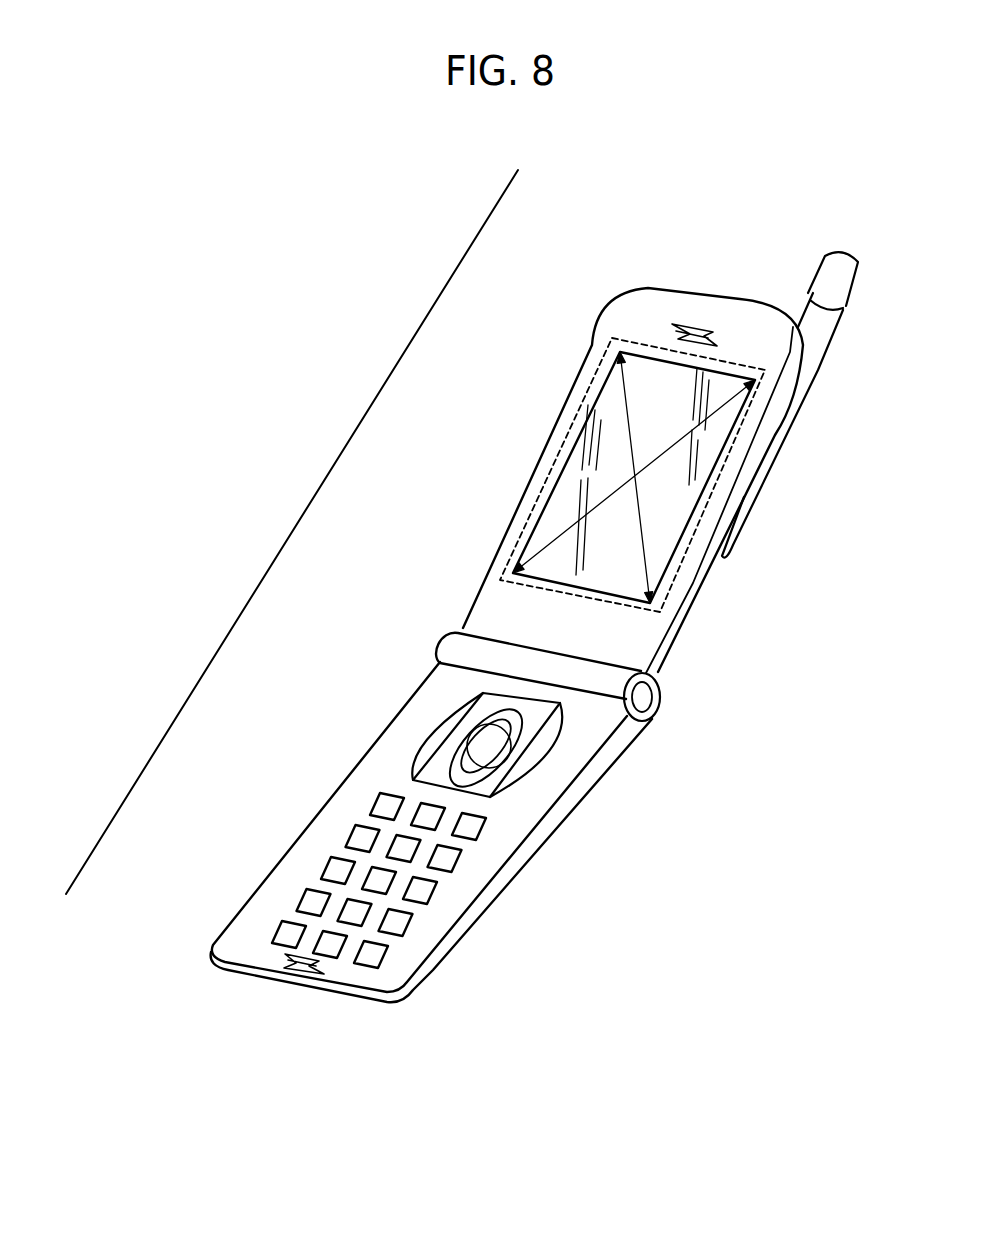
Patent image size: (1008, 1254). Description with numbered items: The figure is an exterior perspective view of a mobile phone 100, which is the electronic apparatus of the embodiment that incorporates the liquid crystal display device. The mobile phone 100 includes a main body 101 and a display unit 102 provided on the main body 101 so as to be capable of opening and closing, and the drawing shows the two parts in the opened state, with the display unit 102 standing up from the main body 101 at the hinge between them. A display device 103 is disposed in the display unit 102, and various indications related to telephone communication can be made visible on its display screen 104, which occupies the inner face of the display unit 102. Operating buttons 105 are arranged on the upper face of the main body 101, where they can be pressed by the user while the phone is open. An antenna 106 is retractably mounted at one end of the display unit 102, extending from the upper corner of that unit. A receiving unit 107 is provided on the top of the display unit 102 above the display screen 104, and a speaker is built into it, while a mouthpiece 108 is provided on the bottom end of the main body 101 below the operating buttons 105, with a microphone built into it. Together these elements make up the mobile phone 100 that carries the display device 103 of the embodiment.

The mobile phone 100 is at (343, 464).
The main body 101 is at (303, 873).
The display unit 102 is at (700, 591).
The display device 103 is at (547, 457).
The display screen 104 is at (605, 398).
The operating buttons 105 is at (360, 898).
The antenna 106 is at (835, 270).
The receiving unit 107 is at (694, 327).
The mouthpiece 108 is at (297, 968).